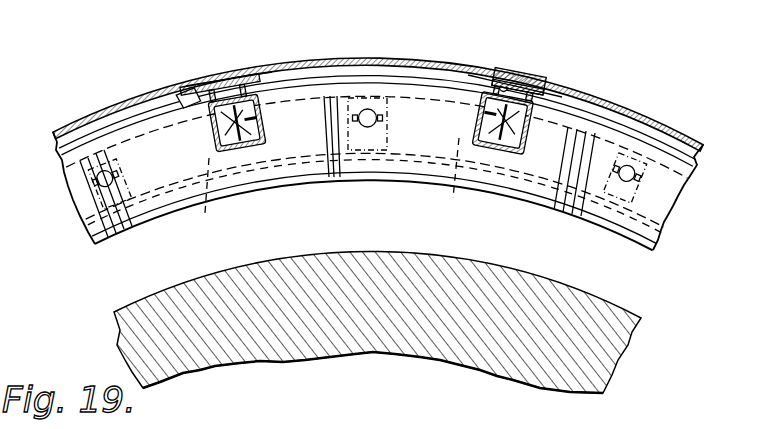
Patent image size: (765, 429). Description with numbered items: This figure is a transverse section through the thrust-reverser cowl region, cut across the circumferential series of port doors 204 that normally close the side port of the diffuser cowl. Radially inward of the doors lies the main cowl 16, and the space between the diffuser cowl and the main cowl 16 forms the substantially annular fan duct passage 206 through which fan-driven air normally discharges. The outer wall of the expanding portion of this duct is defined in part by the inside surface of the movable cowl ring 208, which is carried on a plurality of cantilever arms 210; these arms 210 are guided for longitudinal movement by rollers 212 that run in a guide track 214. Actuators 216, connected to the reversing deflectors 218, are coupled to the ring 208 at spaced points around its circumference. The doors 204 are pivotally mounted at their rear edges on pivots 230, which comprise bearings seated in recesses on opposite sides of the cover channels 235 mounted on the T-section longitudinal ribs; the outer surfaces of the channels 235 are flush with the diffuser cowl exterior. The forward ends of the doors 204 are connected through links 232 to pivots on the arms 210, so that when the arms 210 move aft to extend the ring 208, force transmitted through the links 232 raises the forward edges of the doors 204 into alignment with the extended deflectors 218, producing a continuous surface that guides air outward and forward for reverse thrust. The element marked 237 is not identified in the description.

The main cowl 16 is at (476, 254).
The doors 204 is at (80, 130).
The fan duct passage 206 is at (587, 213).
The movable cowl ring 208 is at (410, 143).
The cantilever arms 210 is at (240, 72).
The rollers 212 is at (222, 133).
The guide track 214 is at (247, 125).
The actuators 216 is at (90, 175).
The reversing deflectors 218 is at (345, 186).
The pivots 230 is at (204, 82).
The links 232 is at (200, 90).
The cover channels 235 is at (213, 77).
The wedge 237 is at (182, 90).